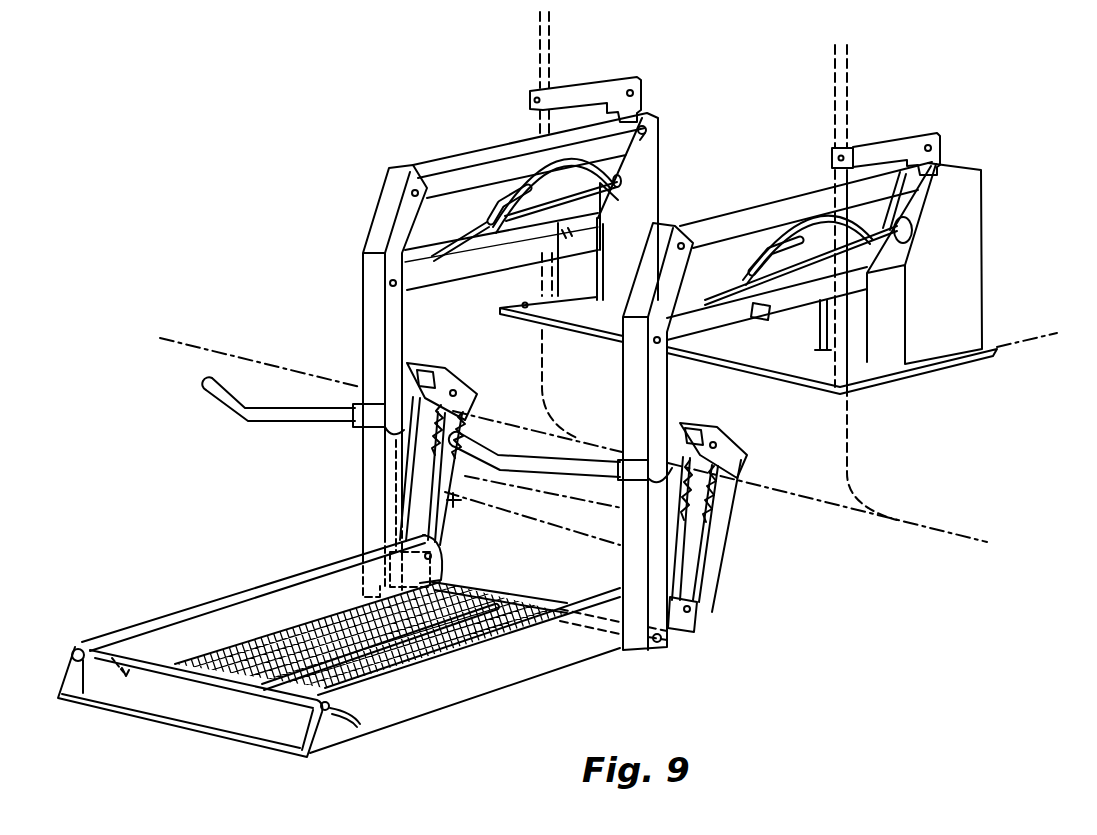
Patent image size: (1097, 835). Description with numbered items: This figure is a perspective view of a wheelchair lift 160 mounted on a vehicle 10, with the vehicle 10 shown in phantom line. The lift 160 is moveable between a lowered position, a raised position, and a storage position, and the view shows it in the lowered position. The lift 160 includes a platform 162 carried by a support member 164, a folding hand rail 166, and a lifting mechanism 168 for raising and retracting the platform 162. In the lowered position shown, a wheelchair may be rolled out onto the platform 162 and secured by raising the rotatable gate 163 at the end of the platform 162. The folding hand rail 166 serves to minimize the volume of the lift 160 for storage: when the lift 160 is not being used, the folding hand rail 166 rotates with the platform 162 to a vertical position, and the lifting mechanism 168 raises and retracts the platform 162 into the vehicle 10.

The vehicle 10 is at (934, 496).
The lift 160 is at (455, 363).
The platform 162 is at (468, 682).
The rotatable gate 163 is at (185, 696).
The support member 164 is at (372, 508).
The folding hand rail 166 is at (232, 412).
The lifting mechanism 168 is at (958, 243).